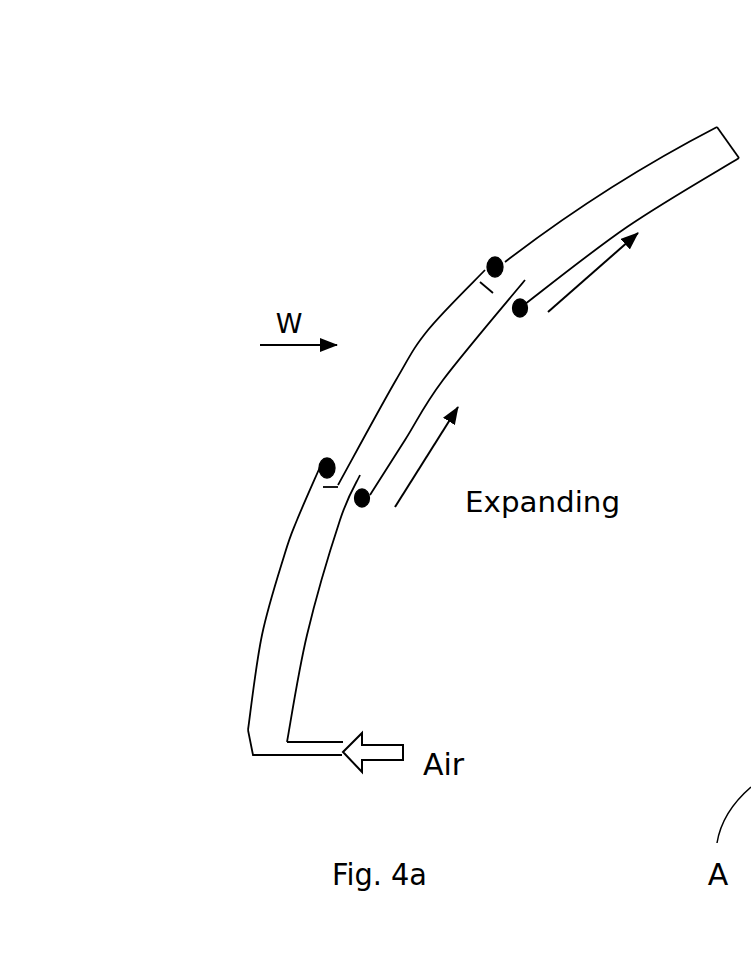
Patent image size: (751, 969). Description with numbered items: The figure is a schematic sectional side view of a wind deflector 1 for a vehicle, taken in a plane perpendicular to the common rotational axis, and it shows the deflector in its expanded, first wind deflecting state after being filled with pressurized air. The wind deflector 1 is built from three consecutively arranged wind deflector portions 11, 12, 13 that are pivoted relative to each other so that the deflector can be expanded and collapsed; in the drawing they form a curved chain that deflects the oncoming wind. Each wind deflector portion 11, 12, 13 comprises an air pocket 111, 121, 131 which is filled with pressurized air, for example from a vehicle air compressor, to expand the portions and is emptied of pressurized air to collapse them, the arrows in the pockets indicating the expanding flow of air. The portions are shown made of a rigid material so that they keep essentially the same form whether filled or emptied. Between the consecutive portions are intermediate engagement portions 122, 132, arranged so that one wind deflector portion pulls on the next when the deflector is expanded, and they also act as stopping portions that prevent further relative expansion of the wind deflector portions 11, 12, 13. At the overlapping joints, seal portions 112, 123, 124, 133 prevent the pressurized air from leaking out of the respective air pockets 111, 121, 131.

The wind deflector 1 is at (453, 228).
The wind deflector portion 11 is at (285, 553).
The air pocket 111 is at (280, 635).
The seal portion 112 is at (320, 464).
The wind deflector portion 12 is at (432, 332).
The air pocket 121 is at (408, 395).
The intermediate engagement portion 122 is at (323, 490).
The seal portion 123 is at (363, 510).
The seal portion 124 is at (487, 262).
The wind deflector portion 13 is at (560, 228).
The air pocket 131 is at (624, 207).
The intermediate engagement portion 132 is at (480, 285).
The seal portion 133 is at (522, 318).